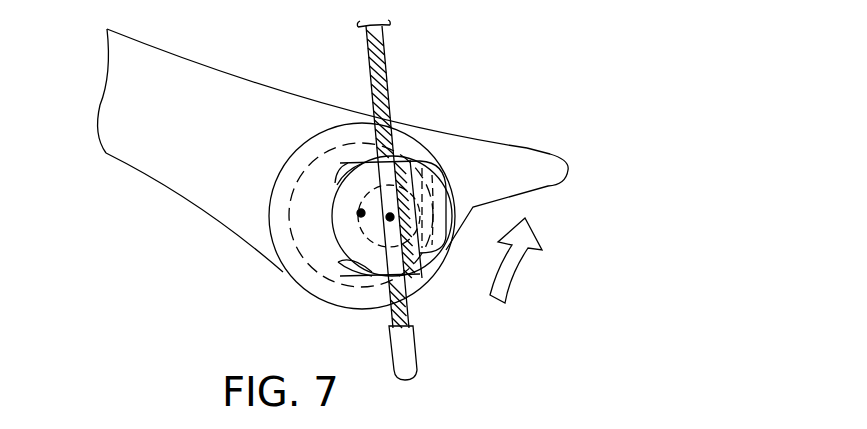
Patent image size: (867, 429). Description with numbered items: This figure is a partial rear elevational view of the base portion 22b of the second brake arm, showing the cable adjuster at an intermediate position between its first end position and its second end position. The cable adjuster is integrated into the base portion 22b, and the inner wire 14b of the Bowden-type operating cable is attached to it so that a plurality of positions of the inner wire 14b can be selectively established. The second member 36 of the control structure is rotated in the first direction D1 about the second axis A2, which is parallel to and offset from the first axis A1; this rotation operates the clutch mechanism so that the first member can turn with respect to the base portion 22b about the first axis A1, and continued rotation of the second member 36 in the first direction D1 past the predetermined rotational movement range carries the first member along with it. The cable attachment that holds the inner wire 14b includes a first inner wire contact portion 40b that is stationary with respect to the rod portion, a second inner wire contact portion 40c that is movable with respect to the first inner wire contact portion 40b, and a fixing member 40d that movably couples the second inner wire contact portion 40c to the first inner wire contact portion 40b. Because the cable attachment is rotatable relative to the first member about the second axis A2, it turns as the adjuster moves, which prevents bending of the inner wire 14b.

The inner wire 14b is at (387, 60).
The base portion 22b is at (152, 175).
The second member 36 is at (525, 147).
The first inner wire contact portion 40b is at (413, 158).
The second inner wire contact portion 40c is at (403, 161).
The fixing member 40d is at (437, 248).
The first axis A1 is at (361, 213).
The second axis A2 is at (390, 217).
The first direction D1 is at (518, 275).